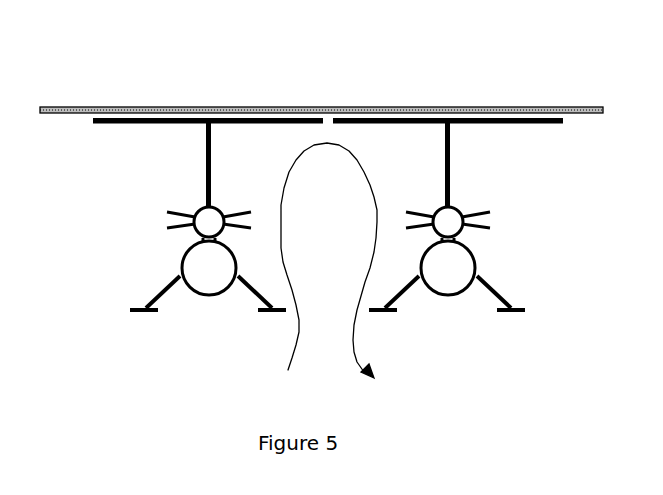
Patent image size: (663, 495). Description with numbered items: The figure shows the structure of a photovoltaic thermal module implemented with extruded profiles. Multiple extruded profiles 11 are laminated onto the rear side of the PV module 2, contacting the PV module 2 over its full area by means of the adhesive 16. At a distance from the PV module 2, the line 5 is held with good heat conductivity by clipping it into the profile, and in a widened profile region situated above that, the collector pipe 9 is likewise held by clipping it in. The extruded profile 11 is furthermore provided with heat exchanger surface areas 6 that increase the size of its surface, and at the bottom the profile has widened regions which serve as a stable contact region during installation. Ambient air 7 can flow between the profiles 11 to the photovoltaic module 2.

The PV module 2 is at (442, 110).
The adhesive 16 is at (397, 117).
The collector pipe 9 is at (203, 140).
The line 5 is at (203, 203).
The extruded profile 11 is at (168, 288).
The heat exchanger surface areas 6 is at (452, 162).
The ambient air 7 is at (334, 278).